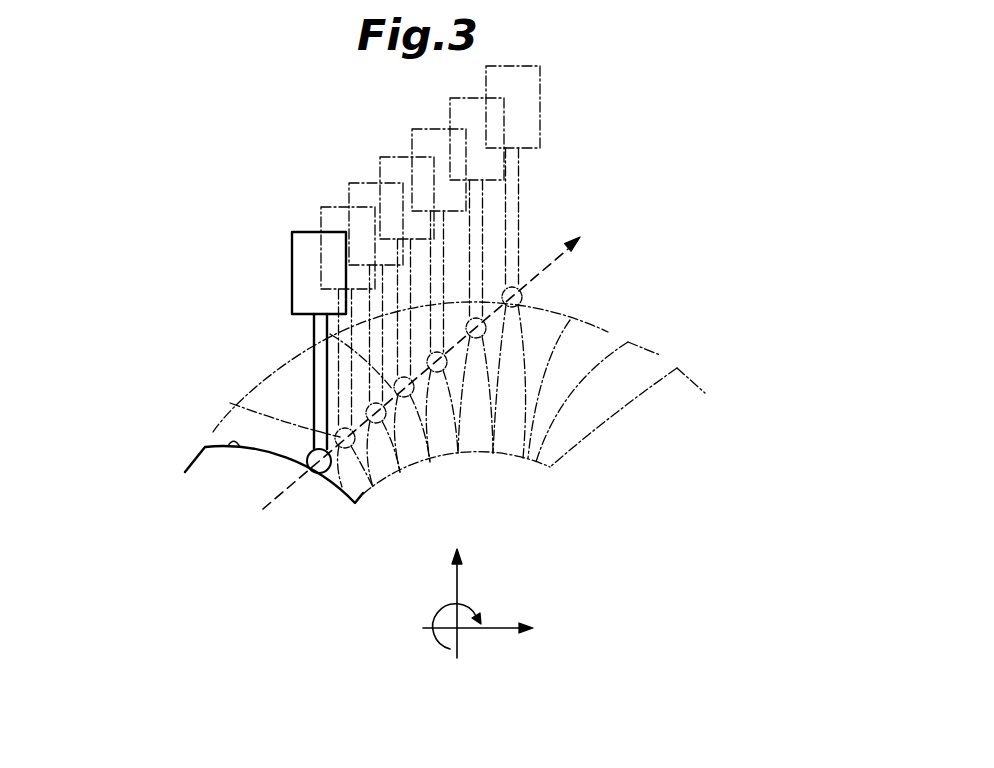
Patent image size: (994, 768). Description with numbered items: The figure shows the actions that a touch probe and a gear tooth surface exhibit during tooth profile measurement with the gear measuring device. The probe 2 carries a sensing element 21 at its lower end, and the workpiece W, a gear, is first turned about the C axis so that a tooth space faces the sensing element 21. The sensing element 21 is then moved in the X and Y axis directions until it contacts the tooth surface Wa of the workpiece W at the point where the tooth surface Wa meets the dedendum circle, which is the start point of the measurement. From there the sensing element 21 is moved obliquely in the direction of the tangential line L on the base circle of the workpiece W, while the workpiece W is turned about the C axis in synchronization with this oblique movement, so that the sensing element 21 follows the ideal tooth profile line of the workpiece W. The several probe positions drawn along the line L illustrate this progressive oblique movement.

The machining tool 2 is at (297, 260).
The sensing element 21 is at (313, 457).
The workpiece W is at (185, 472).
The tooth surface Wa is at (240, 447).
The tangential line L is at (545, 268).
The X axis X is at (447, 602).
The Y axis Y is at (487, 630).
The C axis C is at (449, 620).